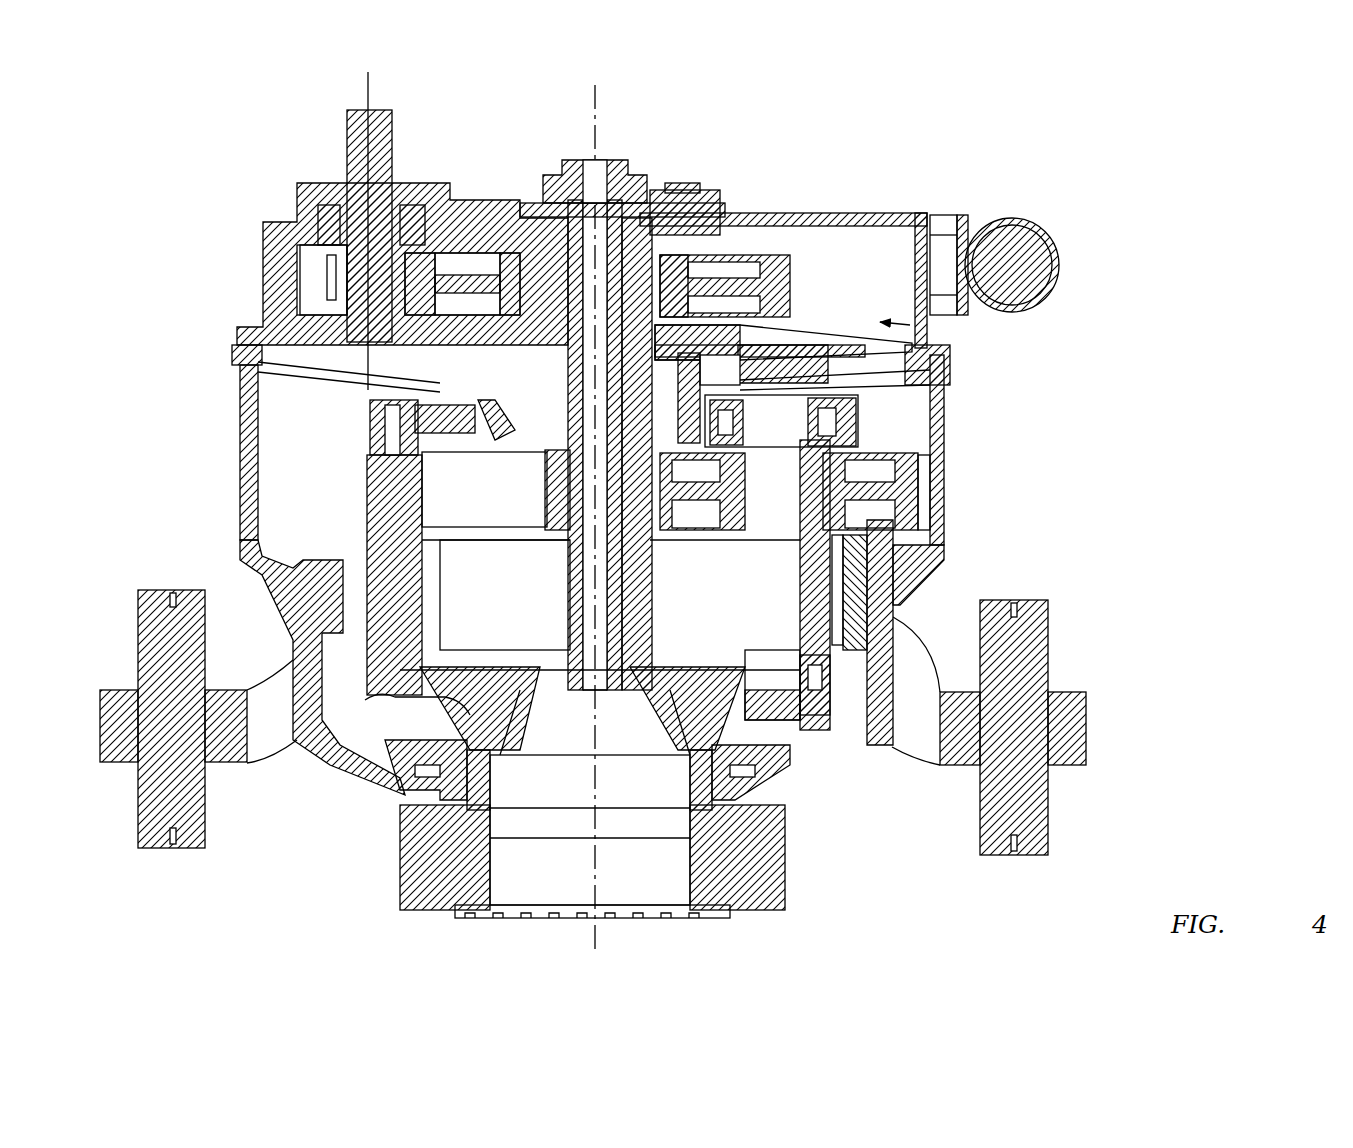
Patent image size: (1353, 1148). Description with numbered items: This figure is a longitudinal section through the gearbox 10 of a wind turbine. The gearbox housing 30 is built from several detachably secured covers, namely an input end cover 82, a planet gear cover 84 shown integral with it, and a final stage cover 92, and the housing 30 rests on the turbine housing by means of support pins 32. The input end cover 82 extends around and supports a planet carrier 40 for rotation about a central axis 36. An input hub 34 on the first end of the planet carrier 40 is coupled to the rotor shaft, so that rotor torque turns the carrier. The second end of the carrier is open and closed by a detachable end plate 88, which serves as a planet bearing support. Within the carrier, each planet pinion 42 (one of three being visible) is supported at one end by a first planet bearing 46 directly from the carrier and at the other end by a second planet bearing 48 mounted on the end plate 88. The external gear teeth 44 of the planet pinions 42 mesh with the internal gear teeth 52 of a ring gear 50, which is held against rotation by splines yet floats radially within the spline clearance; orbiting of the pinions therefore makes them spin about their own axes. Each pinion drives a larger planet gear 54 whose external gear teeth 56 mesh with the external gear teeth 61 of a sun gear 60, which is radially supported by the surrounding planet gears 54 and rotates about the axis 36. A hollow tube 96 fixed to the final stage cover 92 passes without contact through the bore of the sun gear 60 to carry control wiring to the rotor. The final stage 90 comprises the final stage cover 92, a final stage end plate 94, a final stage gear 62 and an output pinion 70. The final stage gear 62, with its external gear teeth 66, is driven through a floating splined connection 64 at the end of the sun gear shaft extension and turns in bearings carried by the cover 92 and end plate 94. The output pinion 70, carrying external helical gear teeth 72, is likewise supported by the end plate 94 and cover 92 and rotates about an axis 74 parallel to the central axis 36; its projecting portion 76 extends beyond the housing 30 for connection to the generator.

The gearbox 10 is at (332, 843).
The gearbox housing 30 is at (243, 525).
The support pins 32 is at (138, 620).
The input hub 34 is at (690, 858).
The central axis 36 is at (598, 92).
The planet carrier 40 is at (325, 745).
The planet pinions 42 is at (840, 645).
The external gear teeth 44 is at (845, 690).
The first planet bearing 46 is at (725, 690).
The second planet bearing 48 is at (850, 430).
The ring gear 50 is at (878, 608).
The internal gear teeth 52 is at (842, 595).
The planet gears 54 is at (930, 515).
The external gear teeth 56 is at (918, 485).
The sun gear 60 is at (545, 500).
The external gear teeth 61 is at (545, 465).
The final stage gear 62 is at (772, 253).
The splined connection 64 is at (690, 188).
The external gear teeth 66 is at (782, 285).
The output pinion 70 is at (325, 290).
The external helical gear teeth 72 is at (327, 262).
The axis 74 is at (375, 82).
The projecting portion 76 is at (394, 142).
The input end cover 82 is at (385, 772).
The planet gear cover 84 is at (242, 478).
The end plate 88 is at (372, 420).
The final stage 90 is at (918, 328).
The final stage cover 92 is at (272, 212).
The final stage end plate 94 is at (245, 332).
The hollow tube 96 is at (610, 158).